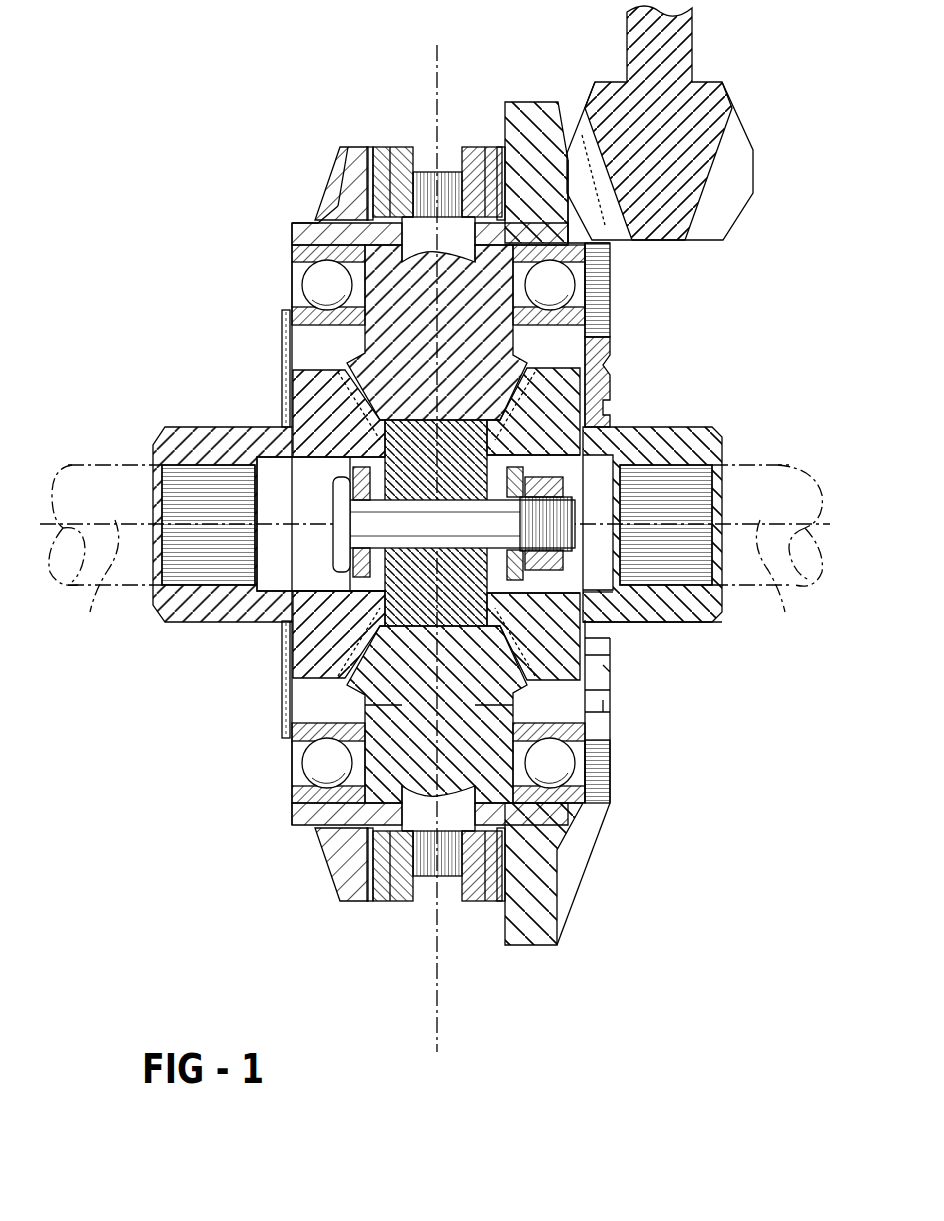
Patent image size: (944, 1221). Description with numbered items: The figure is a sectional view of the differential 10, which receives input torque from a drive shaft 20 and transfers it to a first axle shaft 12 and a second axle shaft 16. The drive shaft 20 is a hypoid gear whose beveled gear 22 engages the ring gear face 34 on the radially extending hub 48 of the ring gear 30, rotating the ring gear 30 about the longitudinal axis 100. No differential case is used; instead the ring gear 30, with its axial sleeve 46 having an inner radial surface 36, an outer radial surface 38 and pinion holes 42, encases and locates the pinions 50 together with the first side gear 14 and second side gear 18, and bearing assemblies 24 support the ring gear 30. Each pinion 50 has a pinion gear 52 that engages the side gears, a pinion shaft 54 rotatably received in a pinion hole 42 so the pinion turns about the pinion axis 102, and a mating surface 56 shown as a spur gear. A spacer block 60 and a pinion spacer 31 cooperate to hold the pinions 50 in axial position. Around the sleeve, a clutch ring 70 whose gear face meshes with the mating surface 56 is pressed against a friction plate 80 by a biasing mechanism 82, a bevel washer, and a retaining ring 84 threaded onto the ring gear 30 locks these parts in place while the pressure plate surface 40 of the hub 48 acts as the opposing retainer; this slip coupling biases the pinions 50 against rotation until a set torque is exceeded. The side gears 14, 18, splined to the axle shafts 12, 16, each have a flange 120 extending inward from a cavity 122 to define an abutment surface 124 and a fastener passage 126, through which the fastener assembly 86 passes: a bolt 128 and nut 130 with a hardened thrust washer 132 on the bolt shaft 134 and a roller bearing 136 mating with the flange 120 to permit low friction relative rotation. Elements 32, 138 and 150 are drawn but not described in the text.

The differential 10 is at (148, 181).
The first axle shaft 12 is at (790, 465).
The first side gear 14 is at (683, 432).
The second axle shaft 16 is at (106, 478).
The second side gear 18 is at (195, 427).
The drive shaft 20 is at (680, 68).
The beveled gear 22 is at (727, 210).
The bearing assemblies 24 is at (305, 262).
The ring gear 30 is at (536, 122).
The pinion spacer 31 is at (320, 285).
The lower carrier block 32 is at (552, 910).
The ring gear face 34 is at (573, 855).
The inner radial surface 36 is at (612, 258).
The outer radial surface 38 is at (305, 218).
The pressure plate surface 40 is at (500, 147).
The pinion holes 42 is at (600, 322).
The axial sleeve 46 is at (326, 205).
The radially extending hub 48 is at (558, 140).
The pinions 50 is at (410, 375).
The pinion gear 52 is at (345, 367).
The pinion shaft 54 is at (375, 742).
The mating surface 56 is at (425, 172).
The spacer block 60 is at (385, 700).
The clutch ring 70 is at (403, 145).
The friction plate 80 is at (393, 147).
The biasing mechanism 82 is at (370, 147).
The retaining ring 84 is at (332, 195).
The fastener assembly 86 is at (292, 612).
The longitudinal axis 100 is at (92, 590).
The pinion axis 102 is at (437, 1040).
The flanges 120 is at (590, 368).
The cavity 122 is at (560, 435).
The abutment surface 124 is at (392, 545).
The fastener passage 126 is at (460, 545).
The bolt 128 is at (300, 648).
The nut 130 is at (600, 622).
The hardened thrust washer 132 is at (585, 605).
The bolt shaft 134 is at (578, 655).
The roller bearing 136 is at (598, 455).
The spacer 138 is at (334, 537).
The bolt head 150 is at (342, 500).